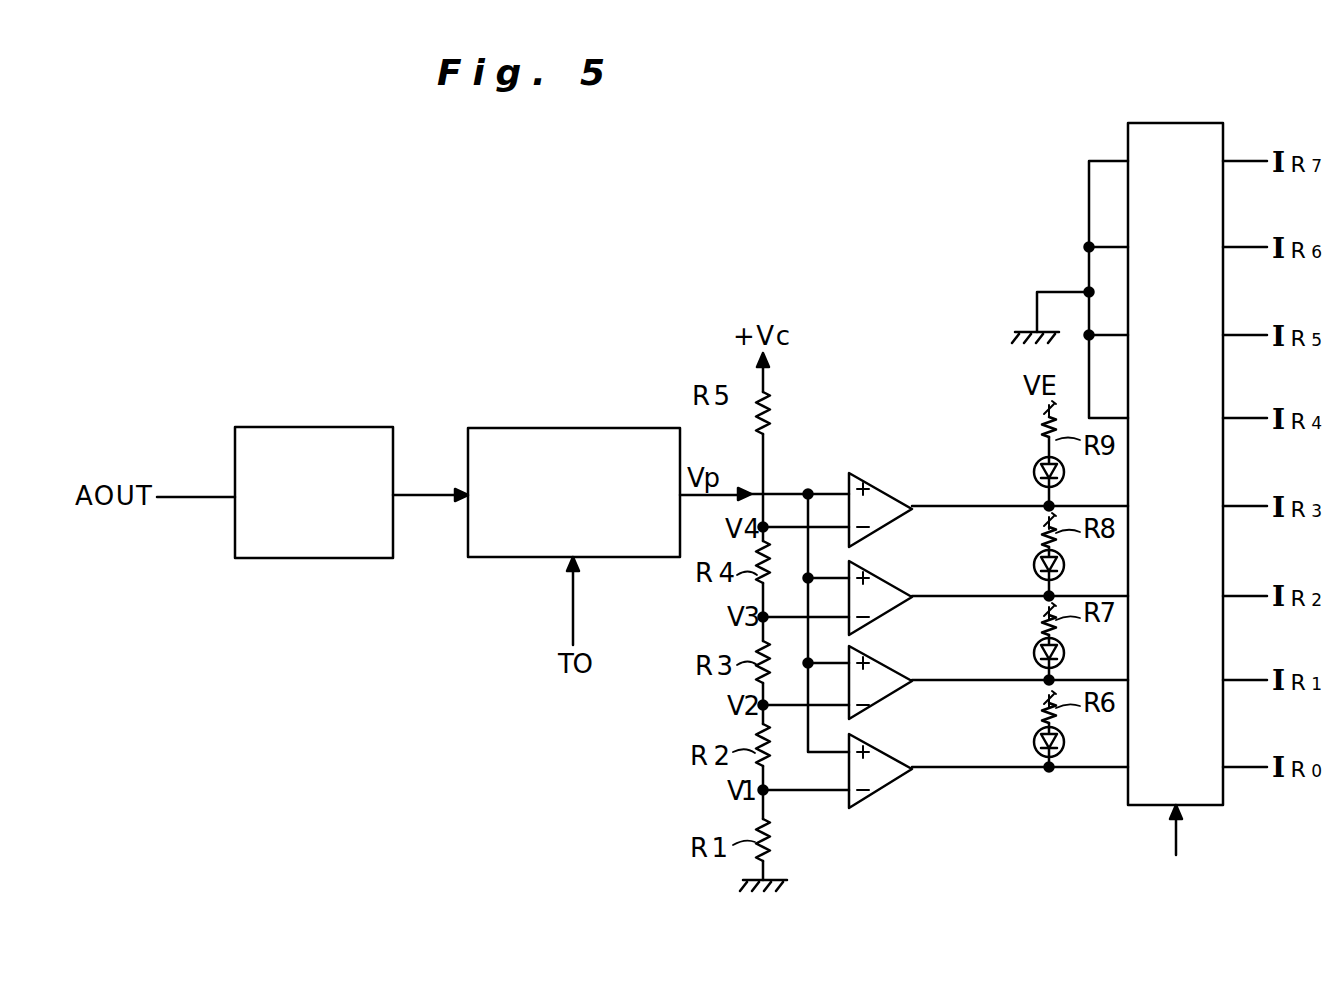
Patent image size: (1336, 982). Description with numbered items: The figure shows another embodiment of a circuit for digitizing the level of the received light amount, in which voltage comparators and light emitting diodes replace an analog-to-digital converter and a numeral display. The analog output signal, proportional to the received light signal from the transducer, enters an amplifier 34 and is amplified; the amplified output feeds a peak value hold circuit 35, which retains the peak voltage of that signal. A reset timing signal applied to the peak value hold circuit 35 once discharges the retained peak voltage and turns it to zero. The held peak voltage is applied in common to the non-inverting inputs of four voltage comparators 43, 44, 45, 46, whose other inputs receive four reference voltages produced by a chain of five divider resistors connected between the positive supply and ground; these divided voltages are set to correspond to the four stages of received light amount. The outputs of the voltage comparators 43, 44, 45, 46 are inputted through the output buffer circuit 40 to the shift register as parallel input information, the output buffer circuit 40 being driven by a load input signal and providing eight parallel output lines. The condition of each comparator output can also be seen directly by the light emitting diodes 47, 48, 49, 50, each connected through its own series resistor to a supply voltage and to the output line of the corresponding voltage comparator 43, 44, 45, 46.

The amplifier 34 is at (273, 437).
The peak value hold circuit 35 is at (546, 437).
The output buffer circuit 40 is at (1140, 140).
The voltage comparator 43 is at (890, 778).
The voltage comparator 44 is at (890, 690).
The voltage comparator 45 is at (890, 605).
The voltage comparator 46 is at (890, 516).
The light emitting diode 47 is at (1034, 743).
The light emitting diode 48 is at (1034, 654).
The light emitting diode 49 is at (1034, 566).
The light emitting diode 50 is at (1034, 469).